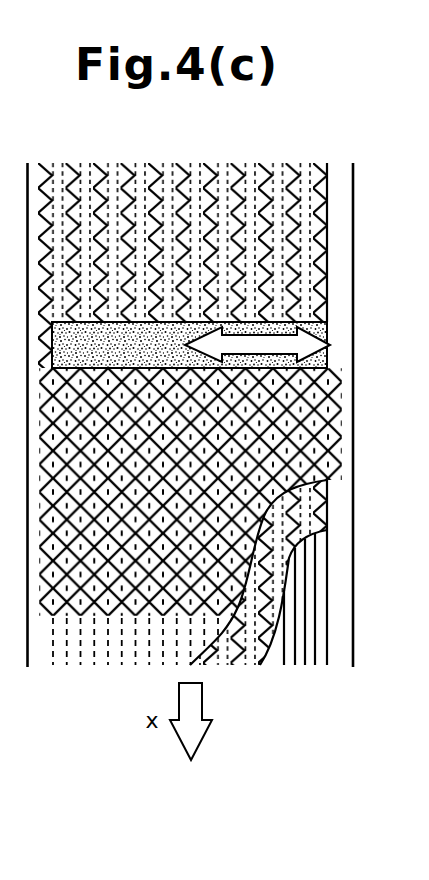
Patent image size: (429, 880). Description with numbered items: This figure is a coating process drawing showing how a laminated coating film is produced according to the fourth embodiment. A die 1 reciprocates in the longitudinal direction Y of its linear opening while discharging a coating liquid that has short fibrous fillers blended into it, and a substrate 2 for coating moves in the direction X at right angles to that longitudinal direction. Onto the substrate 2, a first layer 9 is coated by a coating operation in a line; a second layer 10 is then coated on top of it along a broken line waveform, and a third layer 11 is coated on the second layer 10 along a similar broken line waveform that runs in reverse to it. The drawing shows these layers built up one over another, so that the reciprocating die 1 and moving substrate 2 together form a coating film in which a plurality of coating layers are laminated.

The die 1 is at (330, 352).
The substrate 2 is at (340, 265).
The first layer 9 is at (320, 575).
The second layer 10 is at (327, 494).
The third layer 11 is at (333, 425).